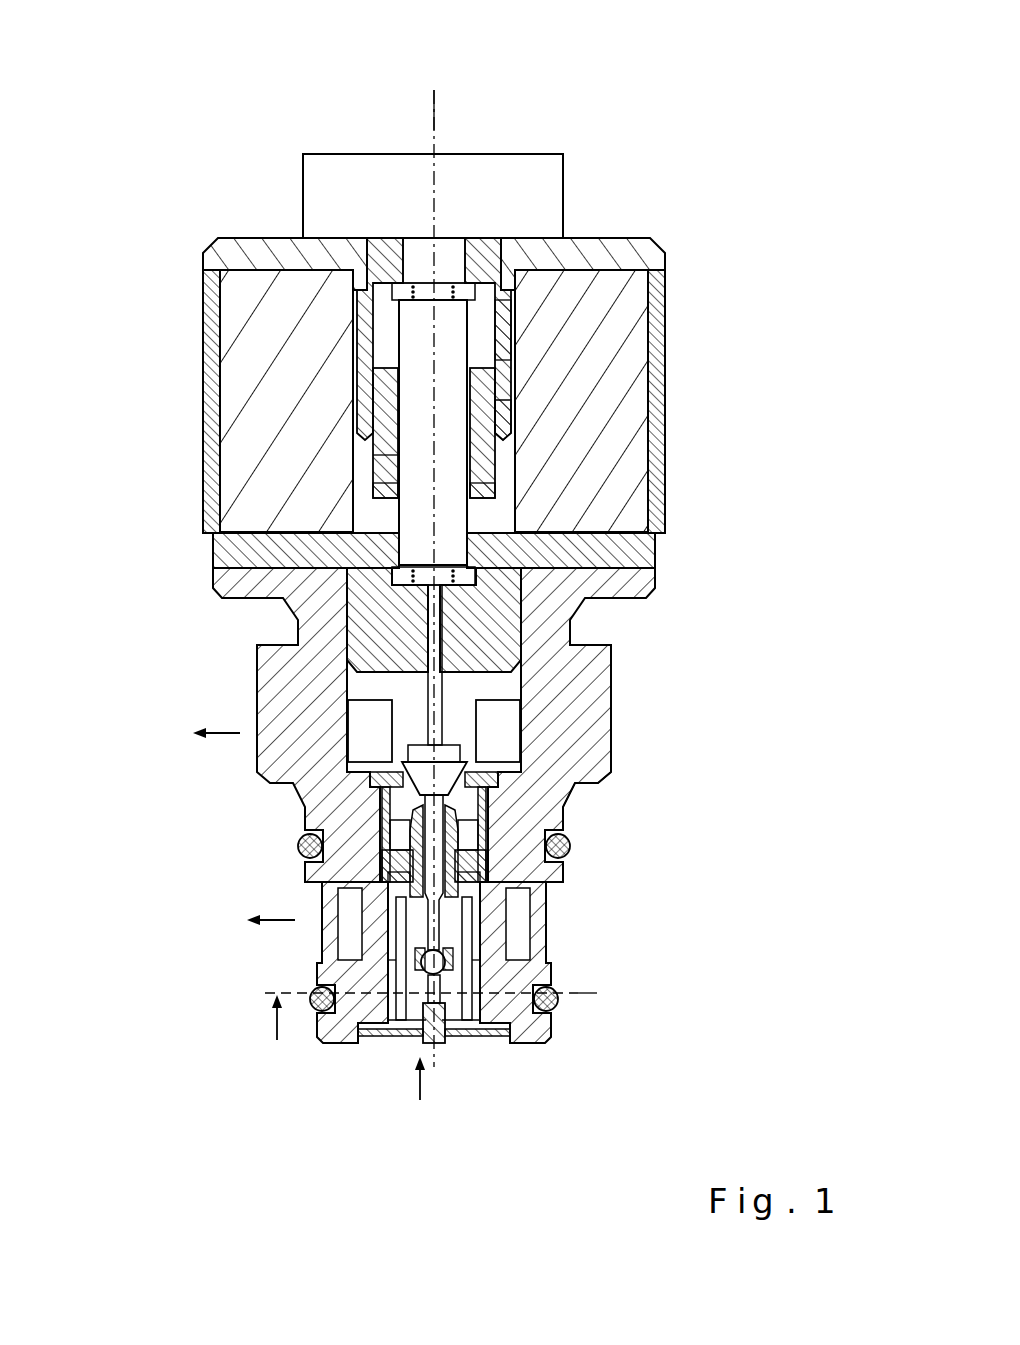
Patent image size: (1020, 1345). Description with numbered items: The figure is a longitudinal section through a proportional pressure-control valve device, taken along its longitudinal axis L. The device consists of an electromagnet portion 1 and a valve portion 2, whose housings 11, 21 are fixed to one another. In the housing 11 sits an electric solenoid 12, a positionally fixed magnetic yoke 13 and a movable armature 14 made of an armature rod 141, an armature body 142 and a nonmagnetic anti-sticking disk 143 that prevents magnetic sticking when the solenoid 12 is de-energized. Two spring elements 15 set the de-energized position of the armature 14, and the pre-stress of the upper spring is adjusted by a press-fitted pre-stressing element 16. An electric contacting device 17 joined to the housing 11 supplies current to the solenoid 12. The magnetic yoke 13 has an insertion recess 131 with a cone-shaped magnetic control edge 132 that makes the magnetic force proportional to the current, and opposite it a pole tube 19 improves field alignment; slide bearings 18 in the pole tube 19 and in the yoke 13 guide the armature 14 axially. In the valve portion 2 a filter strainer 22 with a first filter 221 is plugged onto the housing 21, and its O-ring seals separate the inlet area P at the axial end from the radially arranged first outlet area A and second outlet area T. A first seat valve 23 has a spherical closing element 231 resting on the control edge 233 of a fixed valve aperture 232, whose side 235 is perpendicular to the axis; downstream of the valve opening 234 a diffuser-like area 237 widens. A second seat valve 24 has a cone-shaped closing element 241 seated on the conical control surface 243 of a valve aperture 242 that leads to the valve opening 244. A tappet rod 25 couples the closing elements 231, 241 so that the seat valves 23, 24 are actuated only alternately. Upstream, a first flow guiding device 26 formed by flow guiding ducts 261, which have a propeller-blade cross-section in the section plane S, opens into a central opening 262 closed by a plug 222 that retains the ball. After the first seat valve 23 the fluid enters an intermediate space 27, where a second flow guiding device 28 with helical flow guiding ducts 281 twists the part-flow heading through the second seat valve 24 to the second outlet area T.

The electromagnet portion 1 is at (695, 251).
The valve portion 2 is at (190, 627).
The housing 11 is at (657, 392).
The electric solenoid 12 is at (592, 365).
The magnetic yoke 13 is at (652, 565).
The insertion recess 131 is at (505, 458).
The magnetic control edge 132 is at (492, 494).
The armature 14 is at (416, 407).
The armature rod 141 is at (415, 352).
The armature body 142 is at (390, 460).
The anti-sticking disk 143 is at (377, 483).
The spring element 15 is at (385, 297).
The pre-stressing element 16 is at (417, 262).
The electric contacting device 17 is at (482, 257).
The slide bearing 18 is at (470, 290).
The pole tube 19 is at (486, 182).
The housing 21 is at (637, 583).
The filter strainer 22 is at (303, 1044).
The first filter 221 is at (370, 1044).
The plug 222 is at (460, 1044).
The first seat valve 23 is at (480, 999).
The closing element 231 is at (331, 1044).
The valve aperture 232 is at (560, 985).
The control edge 233 is at (315, 950).
The valve opening 234 is at (392, 893).
The side 235 is at (555, 1044).
The area 237 is at (597, 997).
The second seat valve 24 is at (495, 740).
The closing element 241 is at (565, 875).
The valve aperture 242 is at (592, 768).
The control surface 243 is at (568, 830).
The valve opening 244 is at (400, 766).
The tappet rod 25 is at (437, 694).
The first flow guiding device 26 is at (537, 1044).
The flow guiding ducts 261 is at (442, 1044).
The opening 262 is at (503, 1044).
The intermediate space 27 is at (392, 838).
The second flow guiding device 28 is at (500, 865).
The flow guiding ducts 281 is at (478, 946).
The second outlet area T is at (225, 733).
The first outlet area A is at (262, 930).
The inlet area P is at (420, 1084).
The section plane S is at (275, 1027).
The longitudinal axis L is at (436, 118).